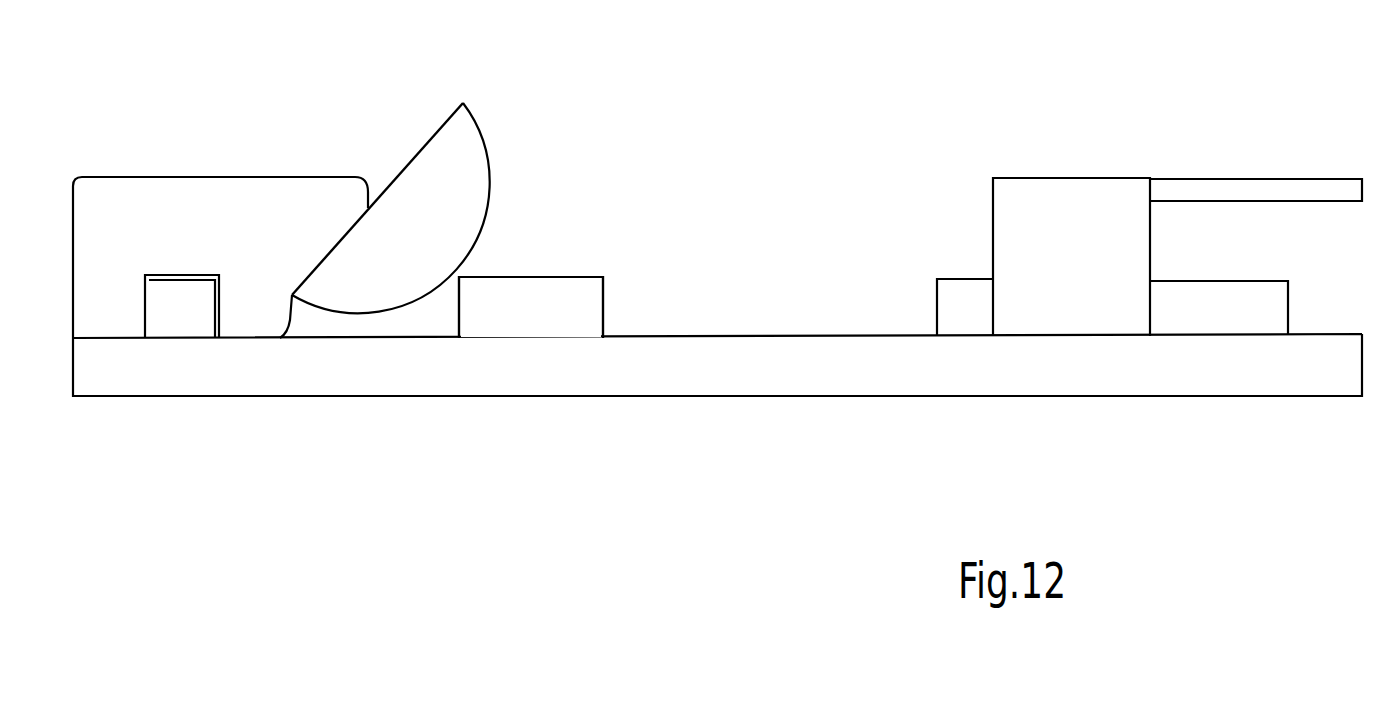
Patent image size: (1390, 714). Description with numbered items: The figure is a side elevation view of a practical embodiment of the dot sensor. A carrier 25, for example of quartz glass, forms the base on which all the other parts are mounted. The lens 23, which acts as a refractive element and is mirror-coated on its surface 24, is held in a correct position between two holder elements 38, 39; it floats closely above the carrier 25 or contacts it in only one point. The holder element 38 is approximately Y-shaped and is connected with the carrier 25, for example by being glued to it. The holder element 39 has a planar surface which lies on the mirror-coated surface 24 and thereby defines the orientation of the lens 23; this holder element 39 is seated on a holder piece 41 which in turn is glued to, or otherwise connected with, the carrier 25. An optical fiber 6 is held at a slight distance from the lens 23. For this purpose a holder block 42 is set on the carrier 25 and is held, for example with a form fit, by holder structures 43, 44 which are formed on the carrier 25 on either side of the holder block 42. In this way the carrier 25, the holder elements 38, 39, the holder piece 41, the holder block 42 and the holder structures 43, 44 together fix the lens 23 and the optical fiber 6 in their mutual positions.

The optical fiber 6 is at (1255, 186).
The lens 23 is at (493, 178).
The surface 24 is at (428, 140).
The carrier 25 is at (883, 379).
The holder element 38 is at (583, 292).
The holder element 39 is at (223, 193).
The holder piece 41 is at (180, 300).
The holder block 42 is at (1071, 257).
The holder structure 43 is at (961, 292).
The holder structure 44 is at (1235, 298).